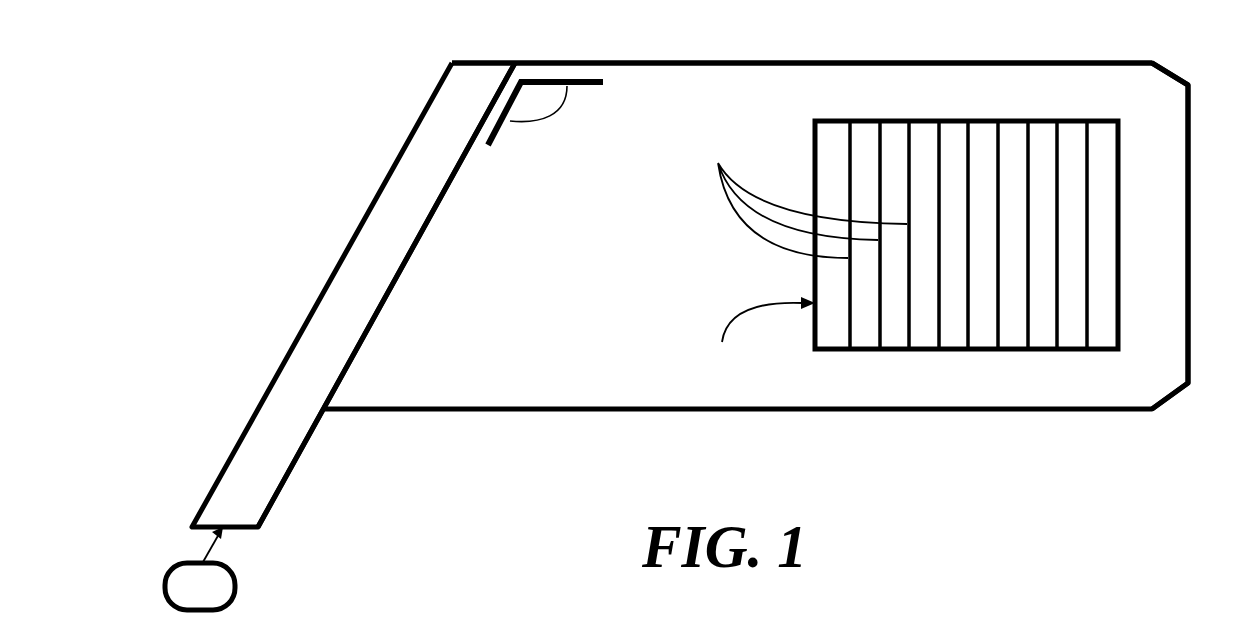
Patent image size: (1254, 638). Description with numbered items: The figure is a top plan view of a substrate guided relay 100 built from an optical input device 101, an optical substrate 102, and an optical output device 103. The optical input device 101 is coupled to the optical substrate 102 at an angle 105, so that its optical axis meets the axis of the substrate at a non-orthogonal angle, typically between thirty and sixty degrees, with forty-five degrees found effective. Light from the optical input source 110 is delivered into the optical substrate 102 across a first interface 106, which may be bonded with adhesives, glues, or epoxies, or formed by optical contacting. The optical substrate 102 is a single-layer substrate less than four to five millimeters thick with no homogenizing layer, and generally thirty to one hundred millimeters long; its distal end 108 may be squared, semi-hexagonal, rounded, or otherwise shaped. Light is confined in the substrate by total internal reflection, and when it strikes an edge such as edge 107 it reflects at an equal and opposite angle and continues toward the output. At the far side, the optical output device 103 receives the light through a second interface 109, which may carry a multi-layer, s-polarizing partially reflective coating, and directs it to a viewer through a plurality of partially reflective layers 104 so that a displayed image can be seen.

The substrate guided relay 100 is at (709, 318).
The optical input device 101 is at (320, 338).
The optical substrate 102 is at (602, 352).
The optical output device 103 is at (980, 352).
The partially reflective layers 104 is at (718, 163).
The angle 105 is at (533, 119).
The first interface 106 is at (400, 275).
The edge 107 is at (755, 62).
The distal end 108 is at (1188, 247).
The second interface 109 is at (760, 330).
The optical input source 110 is at (220, 585).